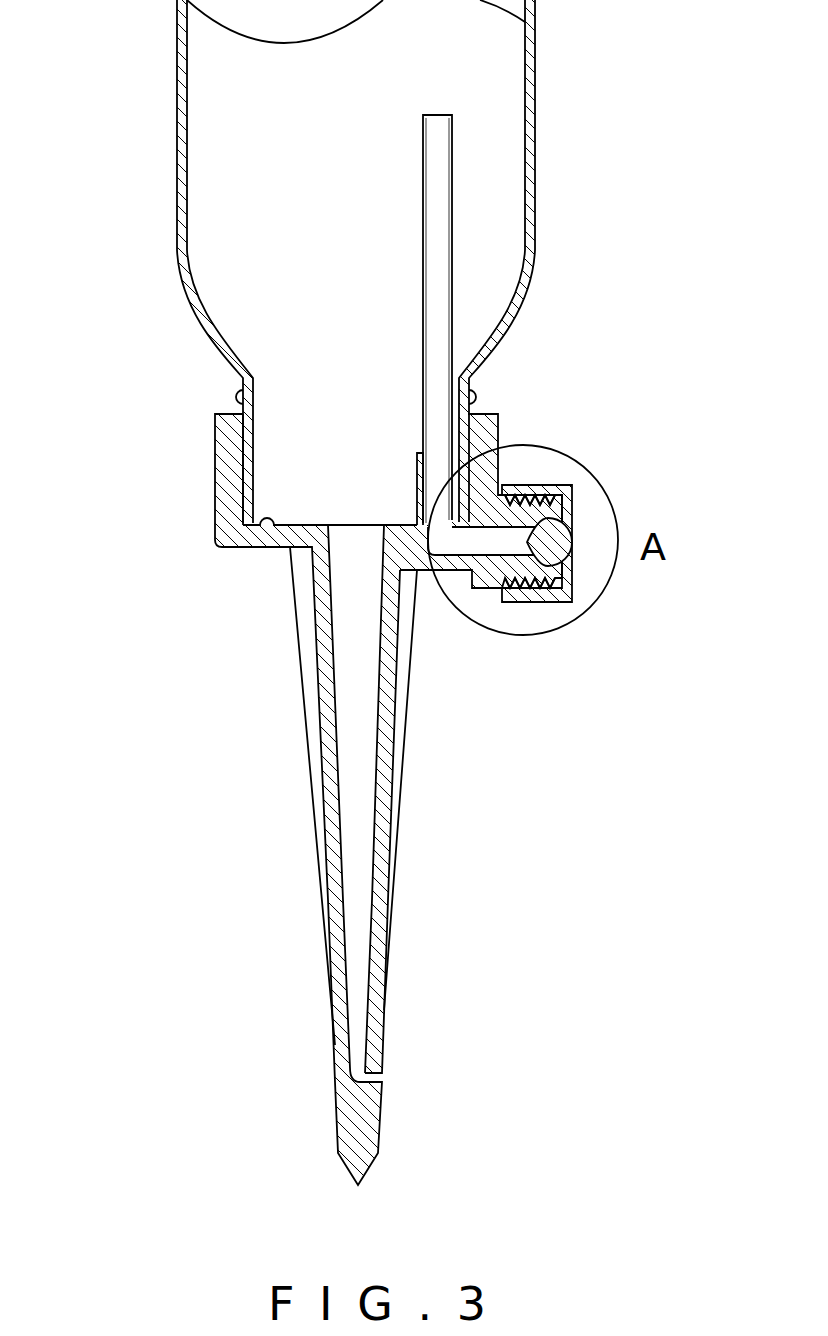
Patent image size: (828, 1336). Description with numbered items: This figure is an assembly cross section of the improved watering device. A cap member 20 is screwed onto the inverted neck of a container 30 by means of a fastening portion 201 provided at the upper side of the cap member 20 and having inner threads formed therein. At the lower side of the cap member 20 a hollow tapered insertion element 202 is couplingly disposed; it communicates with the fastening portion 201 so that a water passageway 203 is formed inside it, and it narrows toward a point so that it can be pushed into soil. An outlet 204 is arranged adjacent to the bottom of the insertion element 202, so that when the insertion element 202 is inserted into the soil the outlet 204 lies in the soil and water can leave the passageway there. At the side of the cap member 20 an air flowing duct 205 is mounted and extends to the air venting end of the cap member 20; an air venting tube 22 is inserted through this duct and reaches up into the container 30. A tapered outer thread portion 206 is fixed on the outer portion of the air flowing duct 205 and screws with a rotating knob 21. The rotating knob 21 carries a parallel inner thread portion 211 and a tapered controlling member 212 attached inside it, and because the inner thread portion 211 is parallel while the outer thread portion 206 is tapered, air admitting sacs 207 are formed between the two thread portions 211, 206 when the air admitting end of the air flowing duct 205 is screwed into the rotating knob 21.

The cap member 20 is at (370, 766).
The fastening portion 201 is at (213, 457).
The hollow tapered insertion element 202 is at (297, 635).
The water passageway 203 is at (353, 708).
The outlet 204 is at (368, 1080).
The air flowing duct 205 is at (455, 540).
The tapered outer thread portion 206 is at (515, 582).
The air admitting sacs 207 is at (545, 497).
The parallel inner thread portion 211 is at (557, 575).
The tapered controlling member 212 is at (556, 546).
The rotating knob 21 is at (520, 478).
The air venting tube 22 is at (452, 150).
The container 30 is at (537, 197).